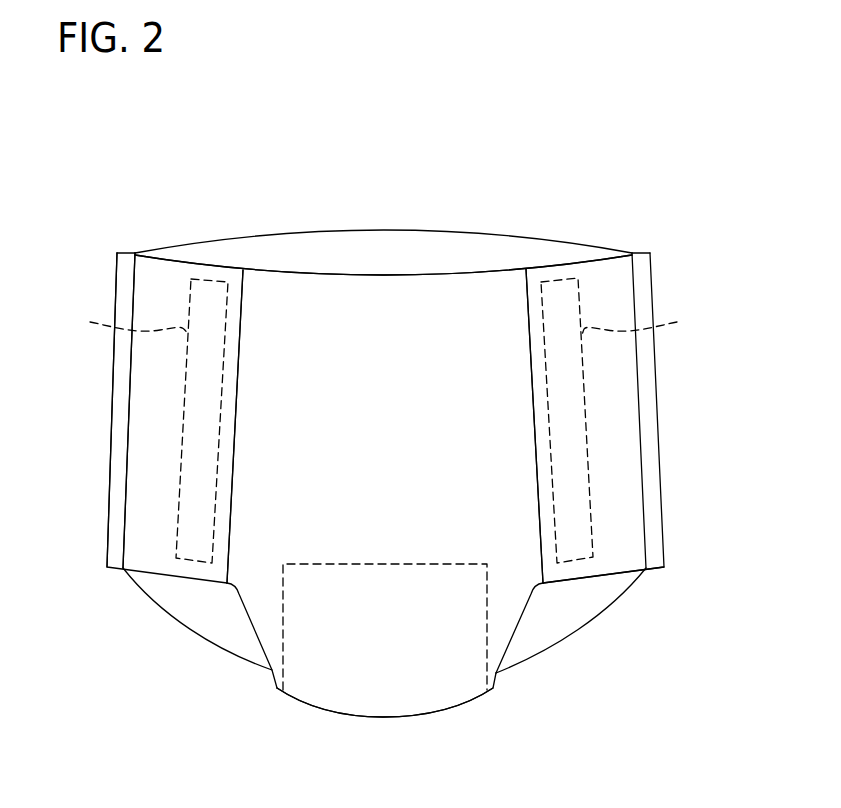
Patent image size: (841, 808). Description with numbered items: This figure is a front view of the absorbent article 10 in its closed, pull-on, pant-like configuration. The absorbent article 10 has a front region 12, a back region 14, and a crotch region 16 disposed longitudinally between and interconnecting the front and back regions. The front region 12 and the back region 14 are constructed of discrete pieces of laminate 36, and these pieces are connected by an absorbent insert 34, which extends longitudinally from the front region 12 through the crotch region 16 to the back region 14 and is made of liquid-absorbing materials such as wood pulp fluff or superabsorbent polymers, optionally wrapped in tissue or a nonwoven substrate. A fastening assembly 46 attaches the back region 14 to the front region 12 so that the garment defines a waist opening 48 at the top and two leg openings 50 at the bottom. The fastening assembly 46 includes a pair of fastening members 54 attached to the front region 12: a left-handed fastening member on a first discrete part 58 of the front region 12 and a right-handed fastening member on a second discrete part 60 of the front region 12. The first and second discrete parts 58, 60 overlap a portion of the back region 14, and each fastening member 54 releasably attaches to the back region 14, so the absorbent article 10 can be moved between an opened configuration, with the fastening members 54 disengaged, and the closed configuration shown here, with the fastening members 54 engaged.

The absorbent article 10 is at (557, 132).
The front region 12 is at (343, 337).
The back region 14 is at (378, 262).
The crotch region 16 is at (335, 717).
The absorbent insert 34 is at (433, 658).
The laminate 36 is at (345, 248).
The fastening assembly 46 is at (178, 473).
The waist opening 48 is at (438, 257).
The leg openings 50 is at (228, 616).
The fastening members 54 is at (383, 320).
The first discrete part 58 is at (613, 557).
The second discrete part 60 is at (158, 275).